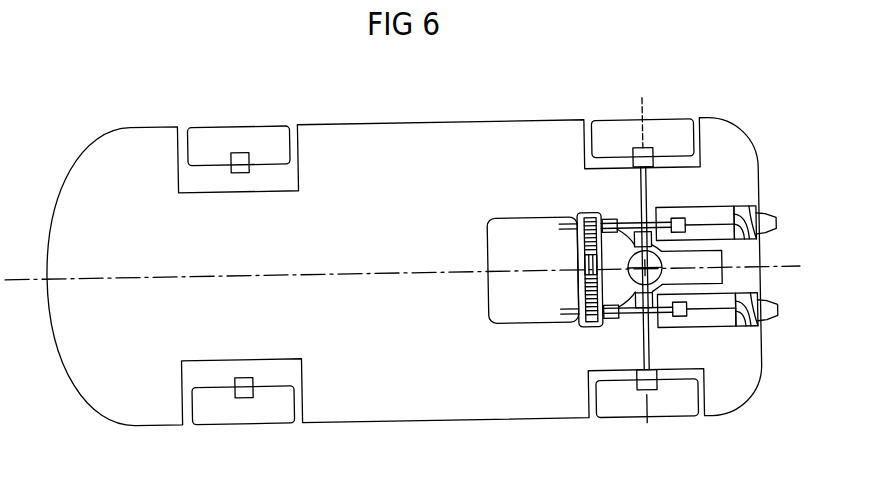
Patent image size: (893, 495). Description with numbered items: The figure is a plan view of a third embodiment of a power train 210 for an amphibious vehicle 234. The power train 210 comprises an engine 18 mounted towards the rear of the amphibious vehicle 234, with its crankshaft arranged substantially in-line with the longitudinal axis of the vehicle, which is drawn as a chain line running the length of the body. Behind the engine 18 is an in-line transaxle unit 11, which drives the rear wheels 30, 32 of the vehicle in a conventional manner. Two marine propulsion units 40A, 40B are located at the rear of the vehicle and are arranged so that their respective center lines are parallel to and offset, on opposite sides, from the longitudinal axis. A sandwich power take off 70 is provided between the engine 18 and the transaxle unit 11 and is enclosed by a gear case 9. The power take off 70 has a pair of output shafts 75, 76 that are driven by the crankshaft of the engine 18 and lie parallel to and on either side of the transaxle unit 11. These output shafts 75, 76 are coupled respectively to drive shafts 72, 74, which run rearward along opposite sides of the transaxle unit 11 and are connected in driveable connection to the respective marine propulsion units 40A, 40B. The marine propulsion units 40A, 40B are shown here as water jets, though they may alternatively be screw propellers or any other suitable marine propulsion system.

The amphibious vehicle 234 is at (366, 226).
The engine 18 is at (541, 264).
The power train 210 is at (568, 274).
The sandwich power take off 70 is at (577, 340).
The gear case 9 is at (598, 216).
The output shaft 75 is at (591, 215).
The output shaft 76 is at (601, 329).
The rear wheel 30 is at (621, 144).
The rear wheel 32 is at (675, 408).
The in-line transaxle unit 11 is at (738, 266).
The marine propulsion unit 40A is at (743, 174).
The marine propulsion unit 40B is at (742, 361).
The drive shaft 72 is at (661, 228).
The drive shaft 74 is at (674, 321).